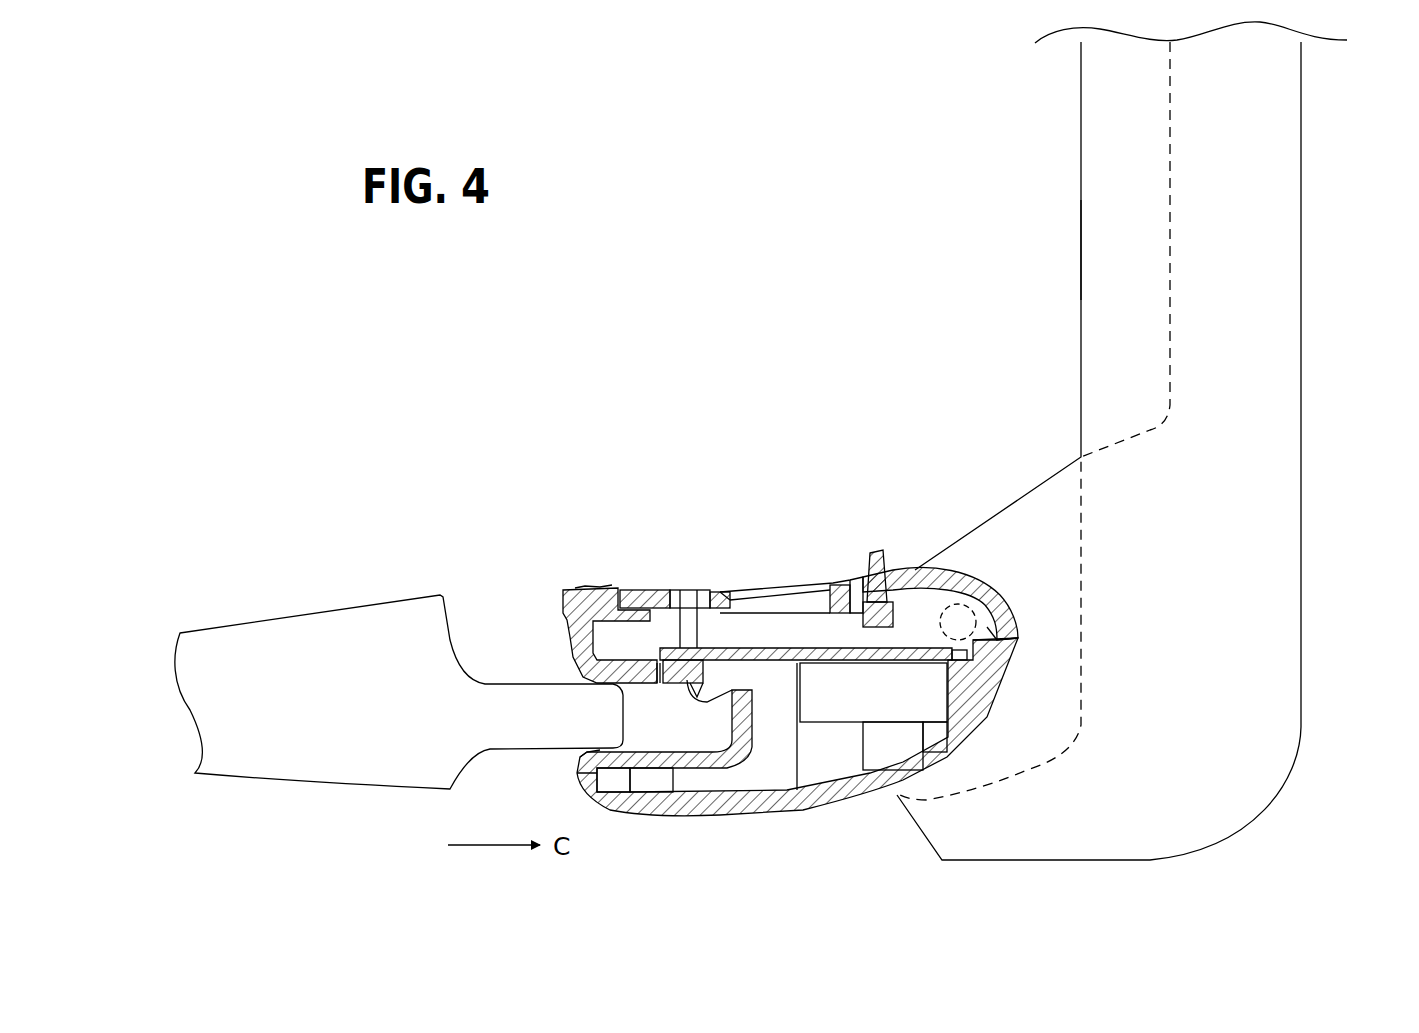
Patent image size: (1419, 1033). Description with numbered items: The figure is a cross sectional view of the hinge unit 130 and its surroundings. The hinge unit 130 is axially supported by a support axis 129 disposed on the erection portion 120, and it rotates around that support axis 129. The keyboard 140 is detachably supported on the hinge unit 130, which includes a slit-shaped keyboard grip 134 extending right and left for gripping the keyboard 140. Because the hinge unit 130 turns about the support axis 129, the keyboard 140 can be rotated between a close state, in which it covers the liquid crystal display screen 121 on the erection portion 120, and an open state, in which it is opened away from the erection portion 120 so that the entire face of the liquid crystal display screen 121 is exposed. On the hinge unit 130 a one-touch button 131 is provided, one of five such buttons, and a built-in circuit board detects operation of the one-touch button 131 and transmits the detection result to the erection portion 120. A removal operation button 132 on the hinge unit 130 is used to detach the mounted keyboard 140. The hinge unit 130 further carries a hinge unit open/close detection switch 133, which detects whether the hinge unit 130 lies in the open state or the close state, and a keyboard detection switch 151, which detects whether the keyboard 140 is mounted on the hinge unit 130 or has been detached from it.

The erection portion 120 is at (1280, 428).
The liquid crystal display screen 121 is at (1095, 238).
The support axis 129 is at (957, 630).
The hinge unit 130 is at (630, 505).
The one-touch button 131 is at (793, 578).
The removal operation button 132 is at (573, 590).
The hinge unit open/close detection switch 133 is at (880, 548).
The keyboard grip 134 is at (575, 755).
The keyboard 140 is at (415, 593).
The keyboard detection switch 151 is at (700, 680).